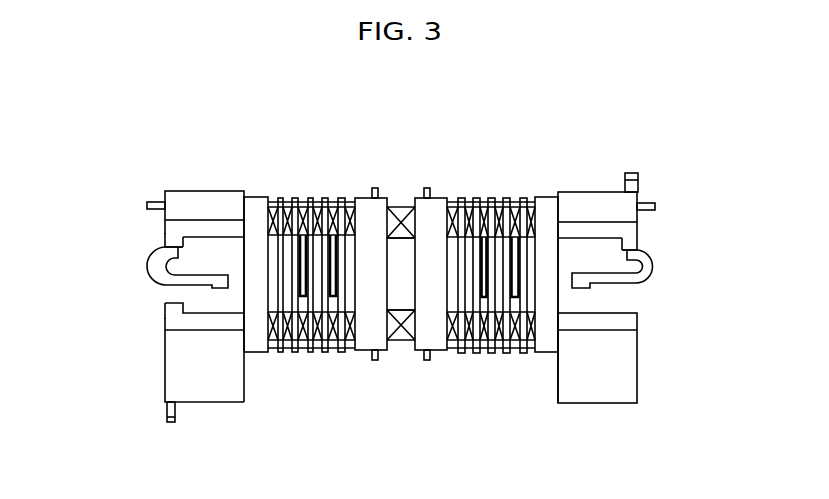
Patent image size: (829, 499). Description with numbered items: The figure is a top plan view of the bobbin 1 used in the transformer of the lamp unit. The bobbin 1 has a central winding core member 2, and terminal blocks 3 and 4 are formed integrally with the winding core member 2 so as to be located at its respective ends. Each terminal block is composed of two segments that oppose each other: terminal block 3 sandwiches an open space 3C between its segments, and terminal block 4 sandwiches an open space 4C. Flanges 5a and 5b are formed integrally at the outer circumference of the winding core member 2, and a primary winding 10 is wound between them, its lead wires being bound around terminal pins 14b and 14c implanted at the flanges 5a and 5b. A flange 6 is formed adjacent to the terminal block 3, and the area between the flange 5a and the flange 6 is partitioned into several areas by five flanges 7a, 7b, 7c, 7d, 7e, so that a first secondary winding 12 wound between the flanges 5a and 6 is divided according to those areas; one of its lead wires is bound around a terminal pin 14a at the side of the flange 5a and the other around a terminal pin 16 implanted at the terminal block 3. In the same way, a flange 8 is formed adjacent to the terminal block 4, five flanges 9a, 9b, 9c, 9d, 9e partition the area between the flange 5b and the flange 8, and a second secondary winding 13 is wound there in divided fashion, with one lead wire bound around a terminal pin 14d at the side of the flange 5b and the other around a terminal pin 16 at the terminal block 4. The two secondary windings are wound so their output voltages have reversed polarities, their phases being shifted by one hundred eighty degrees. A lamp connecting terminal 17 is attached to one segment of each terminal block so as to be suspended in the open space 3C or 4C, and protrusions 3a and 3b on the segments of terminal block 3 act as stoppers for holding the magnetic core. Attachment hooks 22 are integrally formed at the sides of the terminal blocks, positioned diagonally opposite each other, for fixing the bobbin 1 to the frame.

The bobbin 1 is at (738, 170).
The winding core member 2 is at (400, 303).
The terminal block 3 is at (193, 197).
The protrusion 3a is at (164, 233).
The protrusion 3b is at (165, 318).
The open space 3C is at (187, 293).
The terminal block 4 is at (595, 192).
The open space 4C is at (620, 298).
The flange 5a is at (353, 197).
The flange 5b is at (445, 197).
The flange 6 is at (253, 197).
The flange 7a is at (340, 352).
The flange 7b is at (325, 352).
The flange 7c is at (310, 352).
The flange 7d is at (295, 352).
The flange 7e is at (280, 352).
The flange 8 is at (545, 197).
The flange 9a is at (463, 353).
The flange 9b is at (475, 353).
The flange 9c is at (490, 353).
The flange 9d is at (507, 353).
The flange 9e is at (522, 353).
The primary winding 10 is at (400, 207).
The first secondary winding 12 is at (281, 301).
The second secondary winding 13 is at (515, 301).
The terminal pin 14a is at (375, 188).
The terminal pin 14b is at (375, 360).
The terminal pin 14c is at (427, 188).
The terminal pin 14d is at (427, 360).
The terminal pin 16 is at (147, 205).
The lamp connecting terminal 17 is at (152, 265).
The attachment hook 22 is at (170, 425).